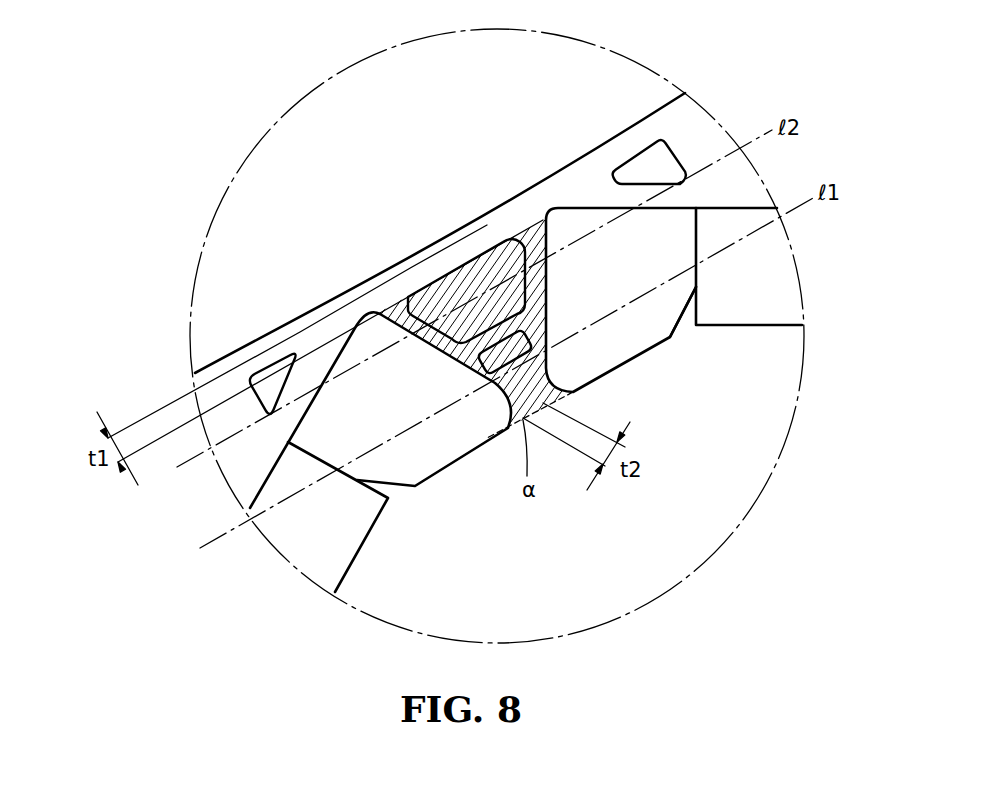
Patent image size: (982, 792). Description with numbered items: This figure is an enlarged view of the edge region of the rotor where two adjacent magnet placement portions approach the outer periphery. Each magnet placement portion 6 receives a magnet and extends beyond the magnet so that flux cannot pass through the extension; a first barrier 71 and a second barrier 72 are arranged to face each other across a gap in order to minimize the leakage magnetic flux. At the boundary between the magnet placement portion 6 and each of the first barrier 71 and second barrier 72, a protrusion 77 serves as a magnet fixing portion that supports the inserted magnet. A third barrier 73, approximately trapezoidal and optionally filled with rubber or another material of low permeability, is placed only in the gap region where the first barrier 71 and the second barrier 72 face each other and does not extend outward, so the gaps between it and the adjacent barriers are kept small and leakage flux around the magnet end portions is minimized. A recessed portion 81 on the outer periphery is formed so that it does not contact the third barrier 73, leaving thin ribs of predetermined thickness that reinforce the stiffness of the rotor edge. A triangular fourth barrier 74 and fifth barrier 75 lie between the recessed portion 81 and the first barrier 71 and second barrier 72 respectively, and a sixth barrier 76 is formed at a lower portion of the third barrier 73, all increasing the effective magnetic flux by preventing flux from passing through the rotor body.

The magnet placement portion 6 is at (773, 268).
The first barrier 71 is at (572, 262).
The second barrier 72 is at (457, 442).
The third barrier 73 is at (497, 268).
The fourth barrier 74 is at (267, 363).
The fifth barrier 75 is at (665, 158).
The sixth barrier 76 is at (520, 345).
The protrusion 77 is at (688, 318).
The recessed portion 81 is at (235, 350).